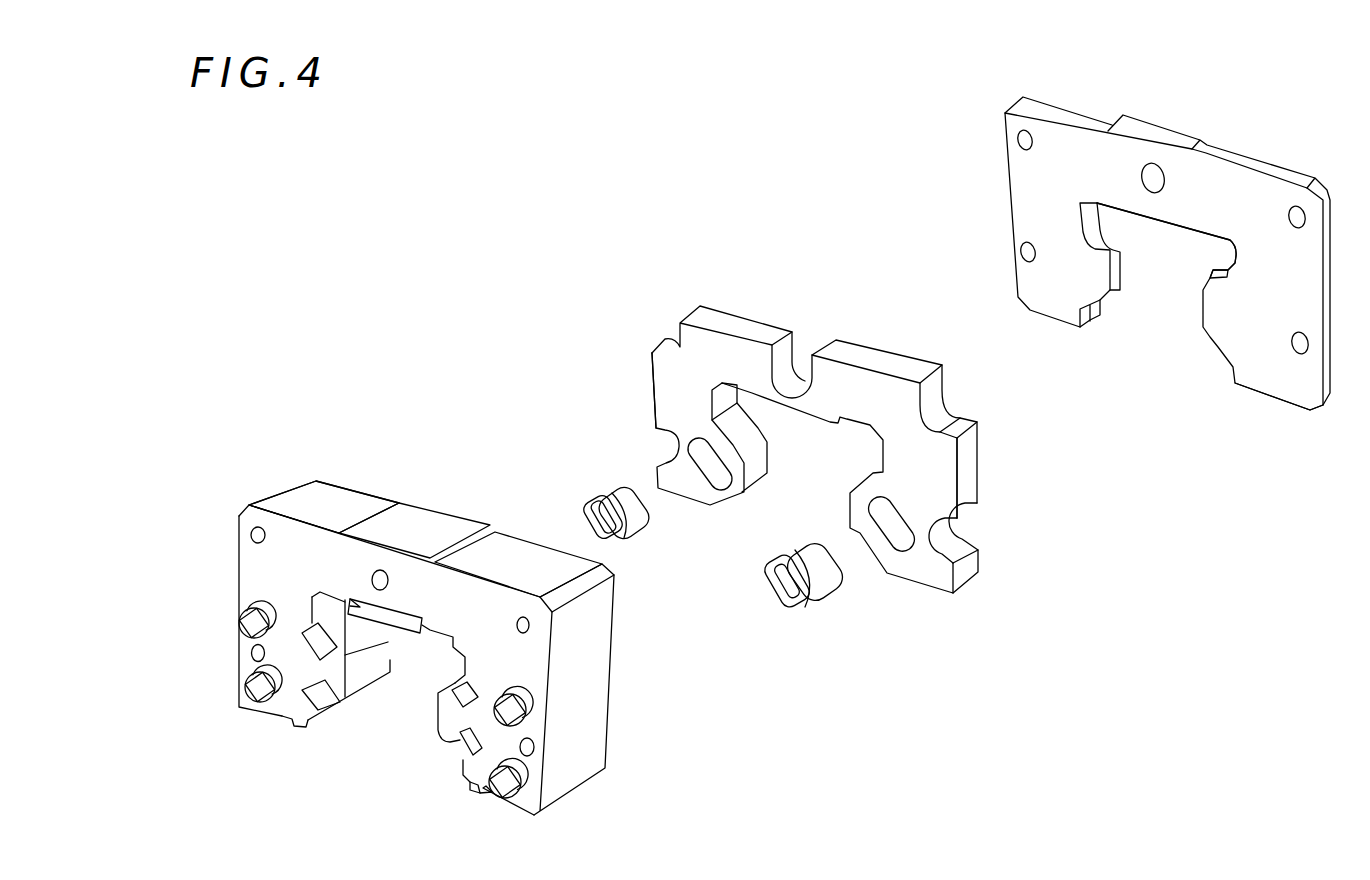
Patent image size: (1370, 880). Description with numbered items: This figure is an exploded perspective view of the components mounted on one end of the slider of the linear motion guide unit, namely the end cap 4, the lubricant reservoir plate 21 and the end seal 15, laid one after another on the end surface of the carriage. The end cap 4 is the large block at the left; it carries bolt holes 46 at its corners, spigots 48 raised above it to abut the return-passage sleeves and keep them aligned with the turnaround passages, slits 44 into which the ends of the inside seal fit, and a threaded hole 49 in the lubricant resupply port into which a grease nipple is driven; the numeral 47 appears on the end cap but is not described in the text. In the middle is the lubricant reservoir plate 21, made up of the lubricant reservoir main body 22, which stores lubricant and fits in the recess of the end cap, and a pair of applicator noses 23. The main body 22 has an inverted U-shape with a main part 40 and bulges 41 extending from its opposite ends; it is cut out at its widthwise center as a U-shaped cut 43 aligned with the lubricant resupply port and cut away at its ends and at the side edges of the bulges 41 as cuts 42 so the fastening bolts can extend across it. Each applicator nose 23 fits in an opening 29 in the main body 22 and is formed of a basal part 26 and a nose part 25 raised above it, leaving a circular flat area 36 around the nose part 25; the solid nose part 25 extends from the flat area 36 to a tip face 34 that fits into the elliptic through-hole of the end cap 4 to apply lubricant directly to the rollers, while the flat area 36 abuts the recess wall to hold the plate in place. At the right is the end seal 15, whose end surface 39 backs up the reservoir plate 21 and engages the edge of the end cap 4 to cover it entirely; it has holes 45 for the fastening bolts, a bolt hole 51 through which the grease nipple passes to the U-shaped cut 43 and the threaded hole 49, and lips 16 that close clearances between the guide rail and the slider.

The end cap 4 is at (337, 496).
The raised top portion 47 is at (377, 493).
The threaded hole 49 is at (385, 573).
The bolt holes 46 is at (255, 528).
The spigots 48 is at (248, 693).
The slits 44 is at (390, 612).
The applicator nose 23 is at (682, 567).
The nose part 25 is at (588, 518).
The basal part 26 is at (648, 520).
The tip face 34 is at (591, 528).
The circular flat area 36 is at (623, 540).
The lubricant reservoir plate 21 is at (820, 437).
The lubricant reservoir main body 22 is at (948, 455).
The main part 40 is at (853, 390).
The bulges 41 is at (688, 410).
The cuts 42 is at (666, 336).
The U-shaped cut 43 is at (785, 350).
The opening 29 is at (720, 462).
The end seal 15 is at (1167, 267).
The bolt hole 51 is at (1157, 175).
The holes 45 is at (1295, 213).
The lips 16 is at (1210, 276).
The end surface 39 is at (1238, 325).